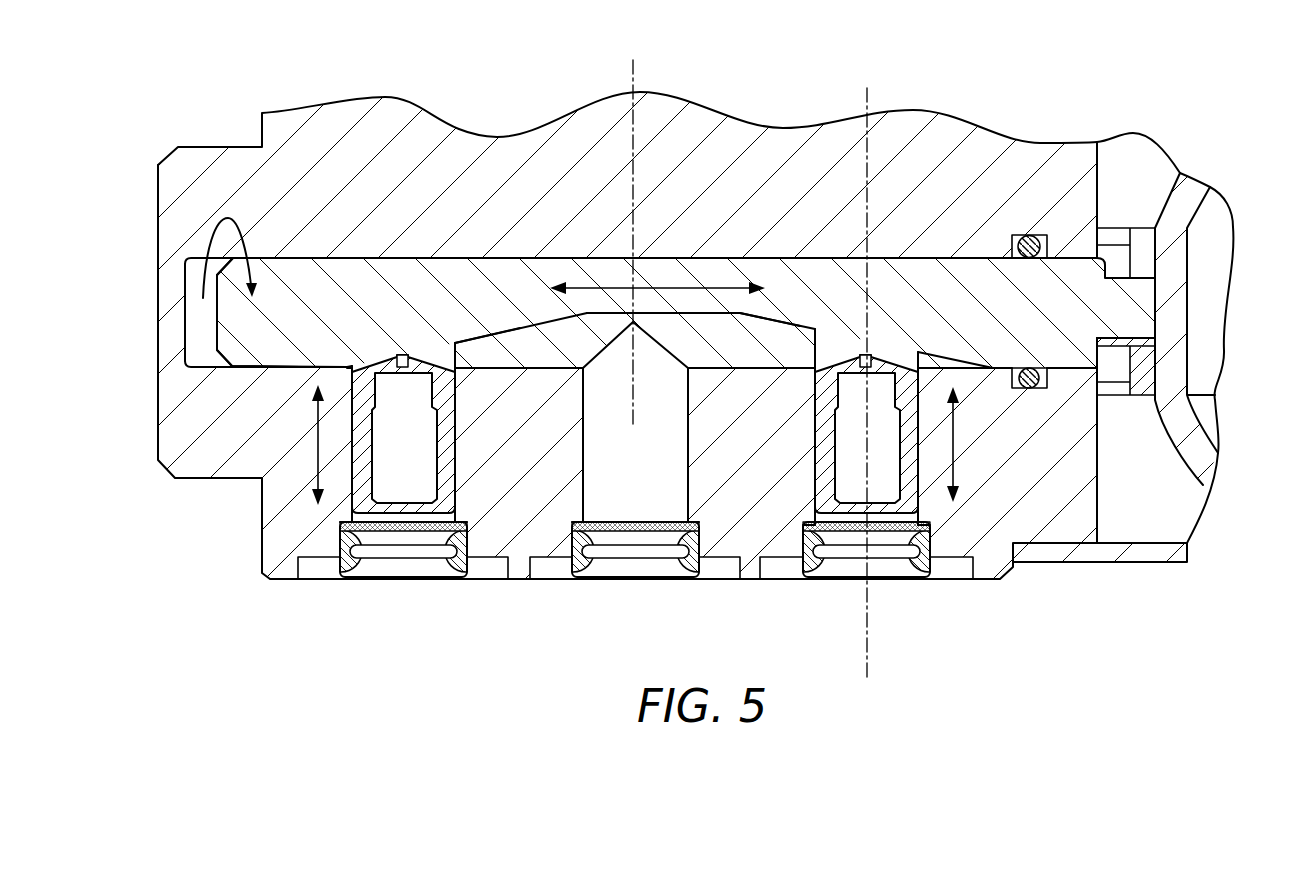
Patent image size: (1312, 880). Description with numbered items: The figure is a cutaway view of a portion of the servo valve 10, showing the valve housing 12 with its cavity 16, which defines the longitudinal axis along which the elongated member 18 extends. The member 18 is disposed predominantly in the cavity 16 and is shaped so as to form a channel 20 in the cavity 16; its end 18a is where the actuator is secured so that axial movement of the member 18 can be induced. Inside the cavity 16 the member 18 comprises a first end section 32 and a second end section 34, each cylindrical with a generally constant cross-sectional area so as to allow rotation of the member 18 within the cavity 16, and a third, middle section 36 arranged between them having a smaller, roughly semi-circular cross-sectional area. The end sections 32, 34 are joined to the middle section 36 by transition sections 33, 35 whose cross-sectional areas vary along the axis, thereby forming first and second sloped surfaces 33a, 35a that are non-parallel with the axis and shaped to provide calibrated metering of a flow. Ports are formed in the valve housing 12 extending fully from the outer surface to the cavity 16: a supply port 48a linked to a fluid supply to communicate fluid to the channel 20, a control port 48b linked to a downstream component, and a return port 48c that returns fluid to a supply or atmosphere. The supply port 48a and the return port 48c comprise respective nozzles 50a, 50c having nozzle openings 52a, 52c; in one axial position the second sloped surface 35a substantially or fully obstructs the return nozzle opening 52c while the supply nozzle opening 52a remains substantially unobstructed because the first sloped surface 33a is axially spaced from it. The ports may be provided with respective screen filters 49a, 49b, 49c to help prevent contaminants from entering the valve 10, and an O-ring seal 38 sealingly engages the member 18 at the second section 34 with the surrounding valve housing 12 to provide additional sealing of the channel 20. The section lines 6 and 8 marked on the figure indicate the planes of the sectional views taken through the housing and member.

The valve 10 is at (1190, 110).
The valve housing 12 is at (946, 130).
The cavity 16 is at (203, 312).
The elongated member 18 is at (315, 275).
The end of the member 18a is at (1162, 312).
The channel 20 is at (715, 350).
The first end section 32 is at (276, 340).
The first transition section 33 is at (443, 290).
The first sloped surface 33a is at (512, 335).
The second end section 34 is at (1067, 342).
The second transition section 35 is at (835, 290).
The second sloped surface 35a is at (788, 327).
The third middle section 36 is at (672, 272).
The O-ring seal 38 is at (1030, 243).
The supply port 48a is at (380, 584).
The control port 48b is at (613, 584).
The return port 48c is at (845, 584).
The screen filter 49a is at (424, 532).
The screen filter 49b is at (656, 532).
The screen filter 49c is at (888, 532).
The supply port nozzle 50a is at (358, 465).
The return port nozzle 50c is at (915, 453).
The supply port nozzle opening 52a is at (404, 352).
The return port nozzle opening 52c is at (870, 353).
The section line 6- 6 is at (867, 85).
The section line 8- 8 is at (633, 57).